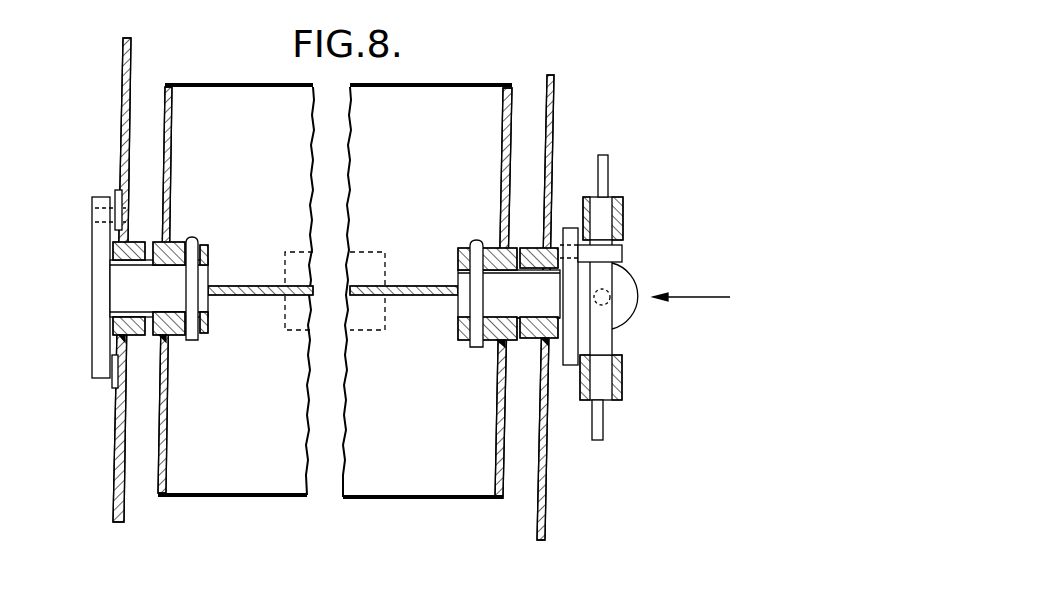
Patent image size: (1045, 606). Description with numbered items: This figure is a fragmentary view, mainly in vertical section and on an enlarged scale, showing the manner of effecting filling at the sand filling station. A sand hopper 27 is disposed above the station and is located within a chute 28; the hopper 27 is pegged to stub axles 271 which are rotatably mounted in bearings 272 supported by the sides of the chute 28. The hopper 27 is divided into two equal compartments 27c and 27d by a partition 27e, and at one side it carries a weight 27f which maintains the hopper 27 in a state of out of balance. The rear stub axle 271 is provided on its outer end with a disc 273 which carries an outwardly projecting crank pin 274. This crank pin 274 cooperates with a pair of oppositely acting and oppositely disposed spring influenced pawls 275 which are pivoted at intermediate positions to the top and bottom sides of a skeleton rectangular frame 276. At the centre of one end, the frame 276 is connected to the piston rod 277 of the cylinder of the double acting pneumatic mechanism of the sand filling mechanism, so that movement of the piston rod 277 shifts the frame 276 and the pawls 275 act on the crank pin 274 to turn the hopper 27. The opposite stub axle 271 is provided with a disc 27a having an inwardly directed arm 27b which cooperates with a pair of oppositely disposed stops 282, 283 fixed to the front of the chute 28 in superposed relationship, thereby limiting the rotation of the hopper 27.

The sand hopper 27 is at (356, 90).
The disc 27a is at (93, 368).
The inwardly directed arm 27b is at (122, 212).
The compartment 27c is at (283, 210).
The compartment 27d is at (285, 388).
The partition 27e is at (357, 289).
The weight 27f is at (385, 252).
The chute 28 is at (123, 132).
The stub axle 271 is at (118, 288).
The bearing 272 is at (113, 262).
The disc 273 is at (571, 228).
The crank pin 274 is at (622, 252).
The spring influenced pawl 275 is at (608, 172).
The skeleton rectangular frame 276 is at (624, 220).
The piston rod 277 is at (610, 302).
The stop 282 is at (117, 190).
The stop 283 is at (114, 390).